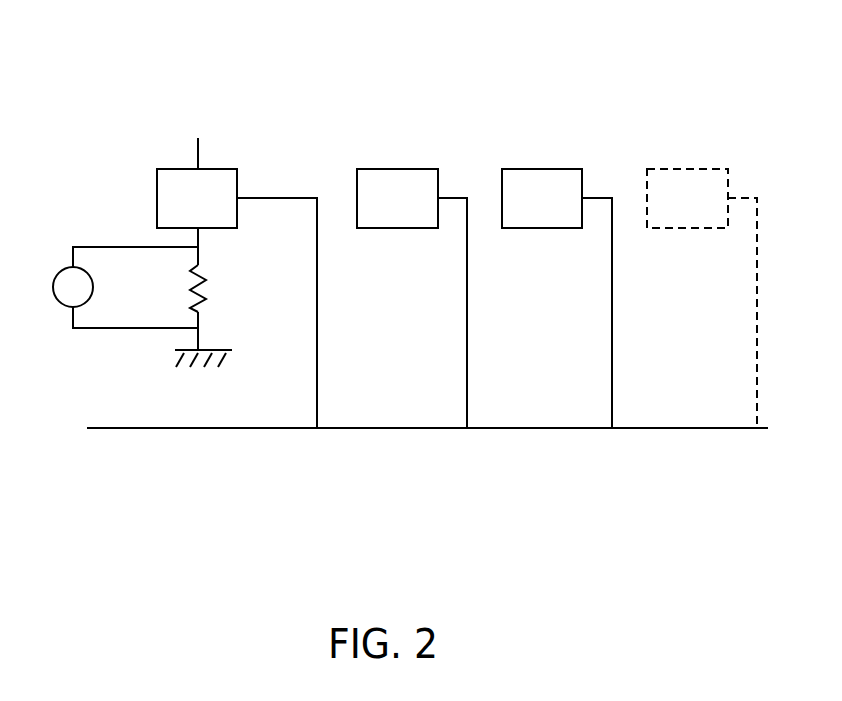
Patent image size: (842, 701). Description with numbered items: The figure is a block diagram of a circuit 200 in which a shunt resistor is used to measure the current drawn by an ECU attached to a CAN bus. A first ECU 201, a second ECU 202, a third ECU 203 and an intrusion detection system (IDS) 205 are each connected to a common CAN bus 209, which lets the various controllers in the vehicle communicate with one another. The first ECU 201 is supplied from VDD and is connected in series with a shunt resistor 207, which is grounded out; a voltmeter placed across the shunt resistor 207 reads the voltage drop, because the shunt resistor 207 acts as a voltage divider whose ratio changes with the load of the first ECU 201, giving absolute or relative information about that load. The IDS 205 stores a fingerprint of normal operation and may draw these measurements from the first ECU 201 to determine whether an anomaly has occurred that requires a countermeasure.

The circuit 200 is at (158, 50).
The first ECU 201 is at (157, 198).
The second ECU 202 is at (398, 169).
The third ECU 203 is at (541, 169).
The intrusion detection system (IDS) 205 is at (686, 169).
The shunt resistor 207 is at (191, 284).
The CAN bus 209 is at (539, 428).